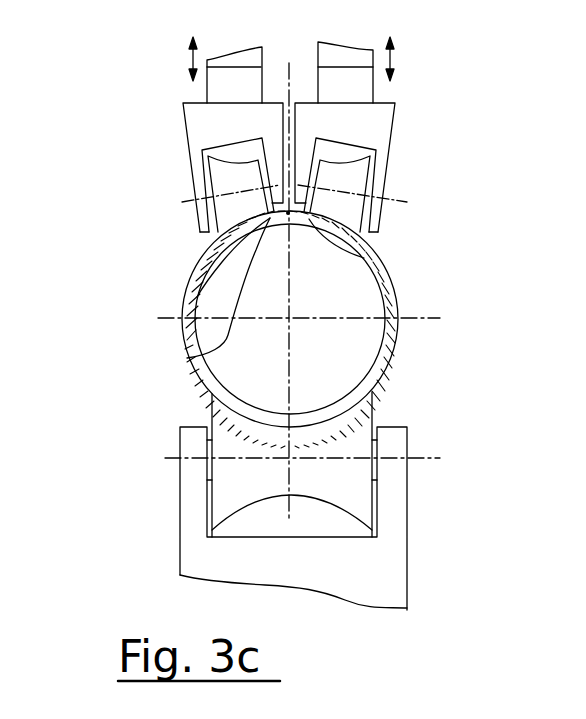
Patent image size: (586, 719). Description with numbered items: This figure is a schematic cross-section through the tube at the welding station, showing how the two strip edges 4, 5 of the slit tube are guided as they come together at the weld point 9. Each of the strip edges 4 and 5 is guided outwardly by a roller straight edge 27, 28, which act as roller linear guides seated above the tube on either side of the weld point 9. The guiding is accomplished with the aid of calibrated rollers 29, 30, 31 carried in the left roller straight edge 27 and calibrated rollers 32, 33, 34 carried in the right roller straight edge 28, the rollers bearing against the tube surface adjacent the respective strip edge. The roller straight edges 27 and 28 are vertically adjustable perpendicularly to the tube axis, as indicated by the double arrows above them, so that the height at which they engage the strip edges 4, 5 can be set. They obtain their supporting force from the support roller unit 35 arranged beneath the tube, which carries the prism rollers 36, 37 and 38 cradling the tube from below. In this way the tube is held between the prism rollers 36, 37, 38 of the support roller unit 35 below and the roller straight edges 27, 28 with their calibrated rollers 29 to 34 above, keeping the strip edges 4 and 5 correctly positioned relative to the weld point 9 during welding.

The strip edge 4 is at (187, 301).
The strip edge 5 is at (380, 260).
The weld point 9 is at (187, 358).
The roller straight edge 27 is at (207, 122).
The roller straight edge 28 is at (370, 129).
The calibrated roller 29 is at (177, 179).
The calibrated roller 30 is at (227, 178).
The calibrated roller 31 is at (180, 195).
The calibrated roller 32 is at (411, 161).
The calibrated roller 33 is at (353, 180).
The calibrated roller 34 is at (408, 173).
The support roller unit 35 is at (368, 573).
The prism roller 36 is at (365, 437).
The prism roller 37 is at (345, 440).
The prism roller 38 is at (362, 437).